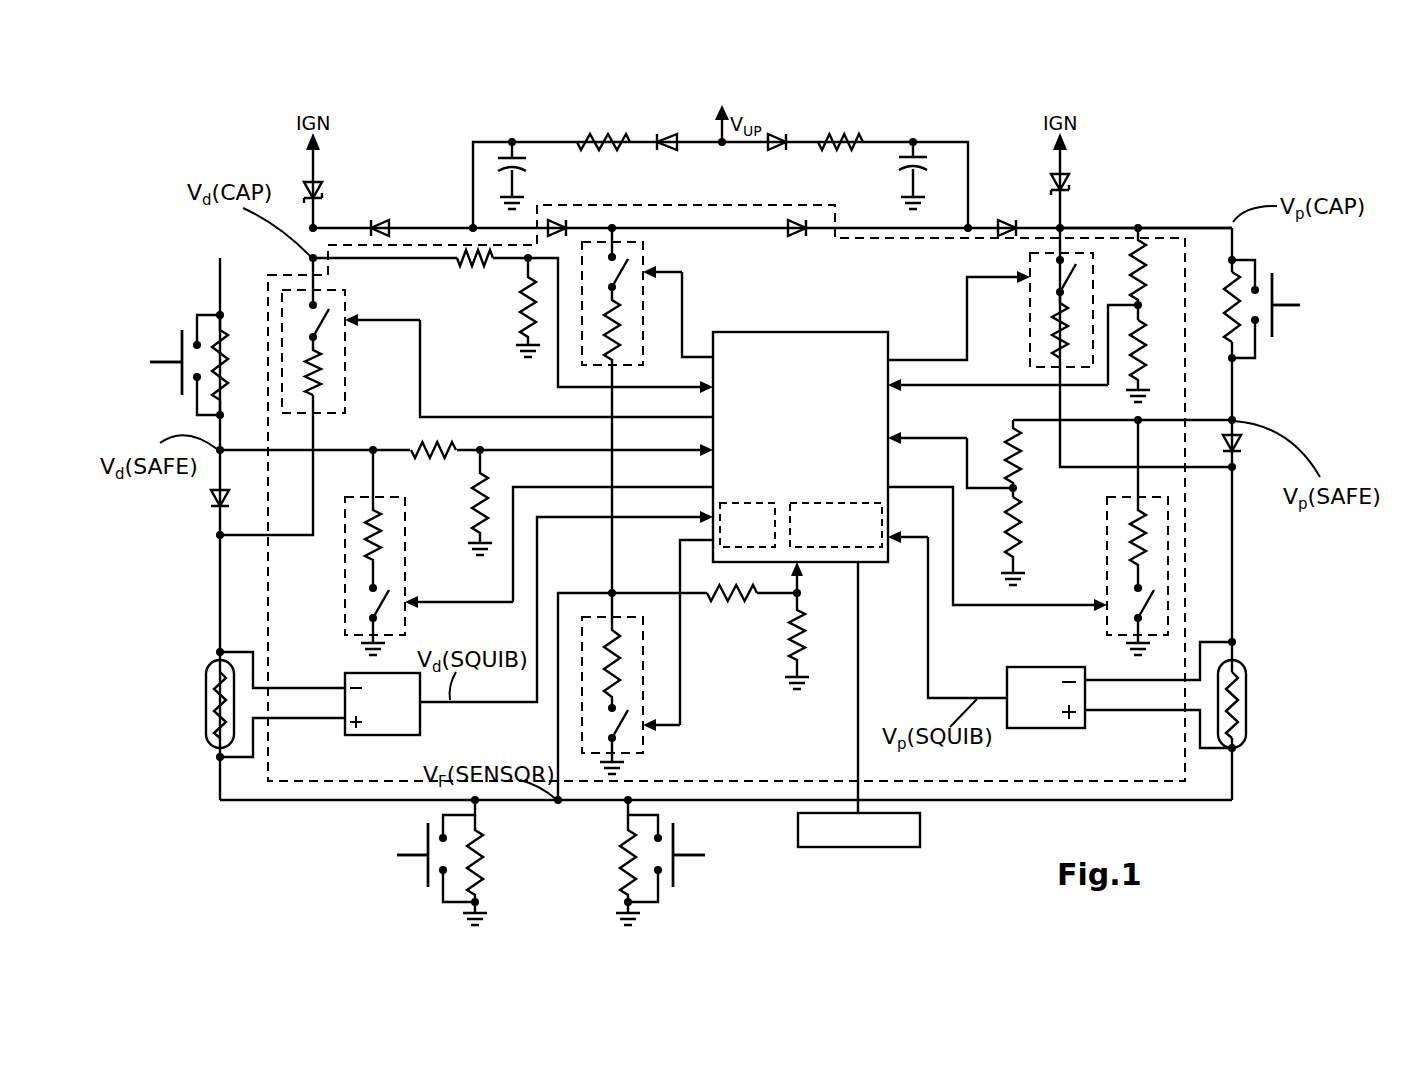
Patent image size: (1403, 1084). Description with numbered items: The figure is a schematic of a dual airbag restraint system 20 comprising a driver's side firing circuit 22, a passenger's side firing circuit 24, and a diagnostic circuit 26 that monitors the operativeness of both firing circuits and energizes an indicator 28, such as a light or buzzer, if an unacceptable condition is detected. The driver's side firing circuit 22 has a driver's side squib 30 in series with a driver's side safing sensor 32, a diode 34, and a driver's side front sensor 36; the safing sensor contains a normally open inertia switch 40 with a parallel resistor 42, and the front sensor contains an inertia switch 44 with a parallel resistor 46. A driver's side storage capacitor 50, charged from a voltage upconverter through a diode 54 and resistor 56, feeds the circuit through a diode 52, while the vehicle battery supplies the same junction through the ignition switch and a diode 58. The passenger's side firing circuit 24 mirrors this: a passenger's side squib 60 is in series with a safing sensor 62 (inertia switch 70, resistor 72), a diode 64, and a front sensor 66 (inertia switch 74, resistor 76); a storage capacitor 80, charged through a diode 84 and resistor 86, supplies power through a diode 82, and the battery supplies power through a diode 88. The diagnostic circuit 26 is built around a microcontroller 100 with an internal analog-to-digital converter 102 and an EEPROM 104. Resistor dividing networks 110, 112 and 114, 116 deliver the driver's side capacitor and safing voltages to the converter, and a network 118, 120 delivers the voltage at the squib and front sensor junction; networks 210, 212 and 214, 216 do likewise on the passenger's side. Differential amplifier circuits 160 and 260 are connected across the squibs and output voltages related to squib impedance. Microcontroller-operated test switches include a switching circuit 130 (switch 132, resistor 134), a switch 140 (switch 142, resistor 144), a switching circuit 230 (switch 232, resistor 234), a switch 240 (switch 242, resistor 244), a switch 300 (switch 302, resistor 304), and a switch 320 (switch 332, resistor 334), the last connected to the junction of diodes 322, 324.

The dual airbag restraint system 20 is at (1240, 165).
The driver's side firing circuit 22 is at (180, 797).
The passenger's side firing circuit 24 is at (1278, 802).
The diagnostic circuit 26 is at (290, 790).
The indicator 28 is at (920, 828).
The driver's side squib 30 is at (207, 670).
The driver's side safing sensor 32 is at (158, 228).
The diode 34 is at (210, 498).
The driver's side front sensor 36 is at (435, 866).
The normally open inertia switch 40 is at (180, 385).
The resistor 42 is at (230, 360).
The normally open inertia switch 44 is at (428, 840).
The resistor 46 is at (478, 860).
The driver's side storage capacitor 50 is at (473, 167).
The diode 52 is at (383, 222).
The diode 54 is at (672, 150).
The resistor 56 is at (612, 137).
The diode 58 is at (320, 195).
The passenger's side squib 60 is at (1243, 665).
The passenger's side safing sensor 62 is at (1307, 425).
The diode 64 is at (1238, 441).
The passenger's side front sensor 66 is at (675, 869).
The normally open inertia switch 70 is at (1277, 287).
The resistor 72 is at (1223, 317).
The normally open inertia switch 74 is at (676, 838).
The resistor 76 is at (620, 858).
The passenger's side storage capacitor 80 is at (895, 160).
The diode 82 is at (1004, 218).
The diode 84 is at (780, 135).
The resistor 86 is at (840, 135).
The diode 88 is at (1070, 190).
The microcontroller 100 is at (800, 426).
The analog-to-digital converter 102 is at (745, 500).
The EEPROM 104 is at (835, 500).
The resistor 110 is at (490, 262).
The resistor 112 is at (520, 307).
The resistor 114 is at (432, 425).
The resistor 116 is at (473, 512).
The resistor 118 is at (722, 600).
The resistor 120 is at (808, 637).
The first controllable switching circuit 130 is at (385, 550).
The normally open switch 132 is at (370, 612).
The resistor 134 is at (367, 537).
The second controllable switch 140 is at (345, 335).
The normally open switch 142 is at (320, 330).
The resistor 144 is at (320, 383).
The differential amplifier circuit 160 is at (386, 735).
The resistor 210 is at (1143, 253).
The resistor 212 is at (1142, 345).
The resistor 214 is at (1017, 460).
The resistor 216 is at (1020, 532).
The controllable switching circuit 230 is at (1164, 537).
The normally open switch 232 is at (1153, 593).
The resistor 234 is at (1143, 543).
The controllable switch 240 is at (1004, 312).
The normally open switch 242 is at (1077, 265).
The resistor 244 is at (1063, 337).
The differential amplifier circuit 260 is at (1030, 720).
The controllable switch 300 is at (657, 665).
The normally open switch 302 is at (633, 713).
The resistor 304 is at (607, 658).
The controllable switch 320 is at (636, 408).
The diode 322 is at (552, 220).
The diode 324 is at (808, 236).
The normally open switch 332 is at (627, 263).
The resistor 334 is at (608, 335).